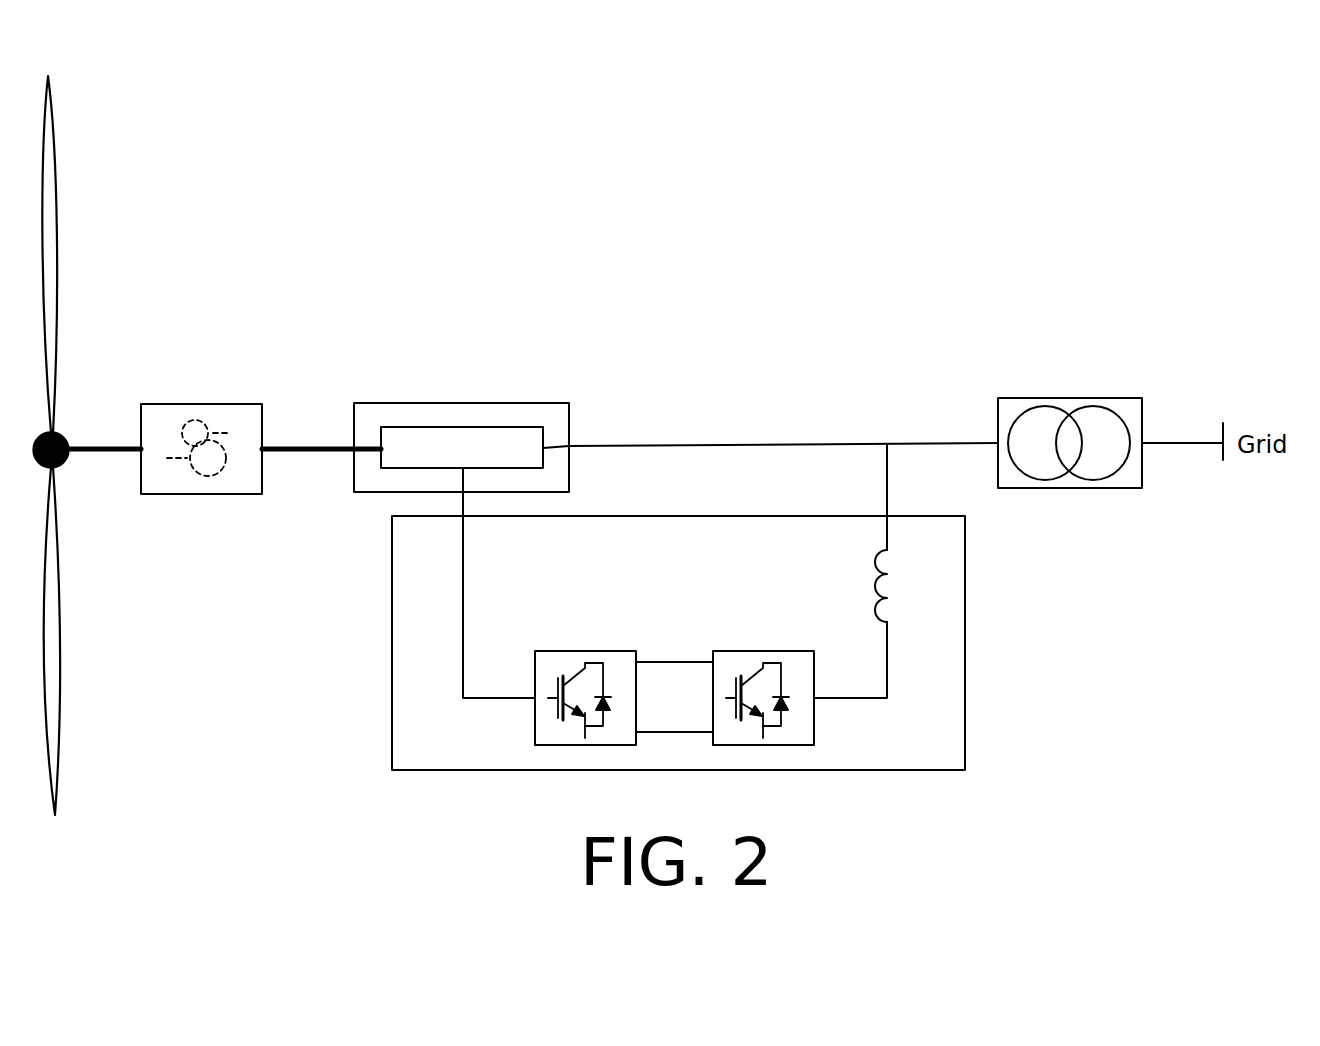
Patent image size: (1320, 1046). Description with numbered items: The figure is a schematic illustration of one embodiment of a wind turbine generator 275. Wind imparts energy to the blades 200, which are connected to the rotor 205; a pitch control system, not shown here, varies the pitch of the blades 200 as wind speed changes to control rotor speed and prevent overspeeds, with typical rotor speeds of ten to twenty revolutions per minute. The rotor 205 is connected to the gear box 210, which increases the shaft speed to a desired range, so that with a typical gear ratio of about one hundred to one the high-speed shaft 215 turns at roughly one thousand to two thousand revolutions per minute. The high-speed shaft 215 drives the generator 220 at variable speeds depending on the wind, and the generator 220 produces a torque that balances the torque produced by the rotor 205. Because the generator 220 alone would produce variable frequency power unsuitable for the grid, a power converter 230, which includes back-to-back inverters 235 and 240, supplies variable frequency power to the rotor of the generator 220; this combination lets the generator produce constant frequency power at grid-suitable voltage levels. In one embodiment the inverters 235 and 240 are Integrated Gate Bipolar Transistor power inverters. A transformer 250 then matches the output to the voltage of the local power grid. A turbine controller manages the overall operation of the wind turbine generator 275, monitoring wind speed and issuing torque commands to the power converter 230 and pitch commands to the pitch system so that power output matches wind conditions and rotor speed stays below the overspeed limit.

The blades 200 is at (60, 235).
The rotor 205 is at (104, 503).
The gear box 210 is at (207, 403).
The high-speed shaft 215 is at (294, 452).
The generator 220 is at (461, 429).
The power converter 230 is at (950, 758).
The inverter 235 is at (567, 650).
The inverter 240 is at (745, 650).
The transformer 250 is at (1056, 424).
The wind turbine generator 275 is at (1070, 243).